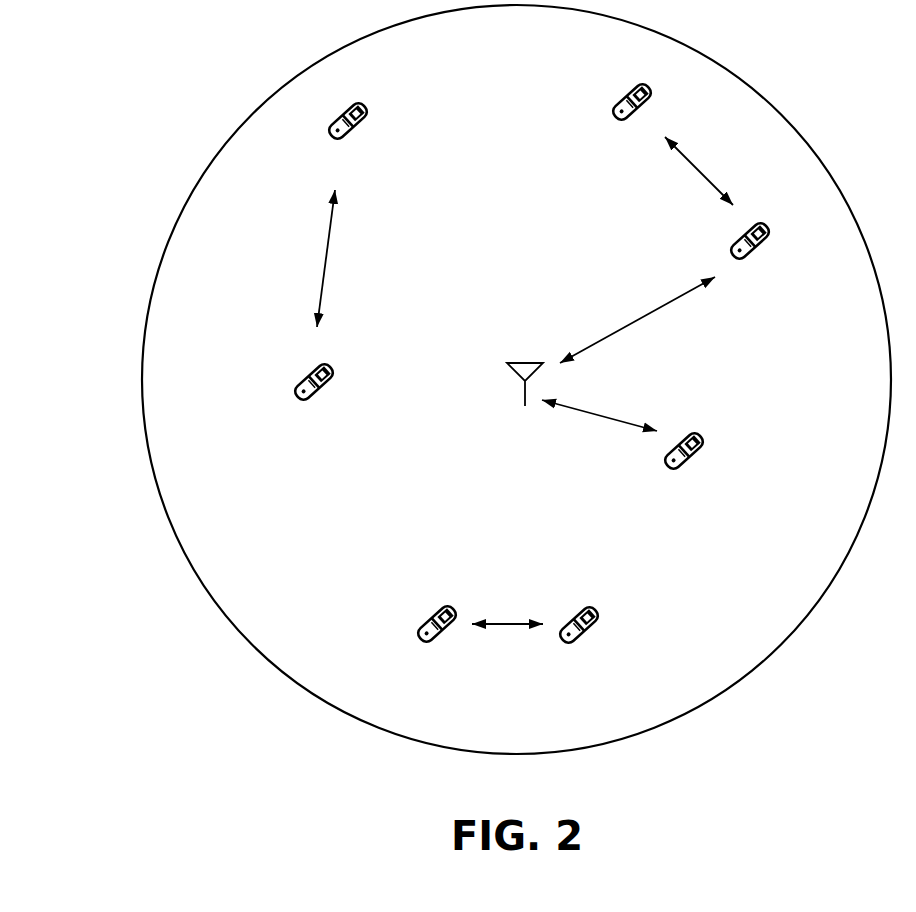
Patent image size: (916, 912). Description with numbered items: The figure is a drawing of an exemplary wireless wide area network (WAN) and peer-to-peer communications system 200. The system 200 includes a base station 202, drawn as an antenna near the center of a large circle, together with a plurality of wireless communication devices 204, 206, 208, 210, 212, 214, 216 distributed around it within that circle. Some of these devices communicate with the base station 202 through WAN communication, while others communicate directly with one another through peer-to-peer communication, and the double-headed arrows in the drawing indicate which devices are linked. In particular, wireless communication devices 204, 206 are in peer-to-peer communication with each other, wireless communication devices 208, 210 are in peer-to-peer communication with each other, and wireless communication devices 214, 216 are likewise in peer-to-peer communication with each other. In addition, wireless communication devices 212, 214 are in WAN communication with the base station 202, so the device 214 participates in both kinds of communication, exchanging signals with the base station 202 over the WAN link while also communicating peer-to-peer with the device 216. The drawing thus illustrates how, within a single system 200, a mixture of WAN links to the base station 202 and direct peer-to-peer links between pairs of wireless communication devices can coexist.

The wireless wide area network and peer-to-peer communications system 200 is at (185, 80).
The base station 202 is at (512, 387).
The wireless communication device 204 is at (313, 398).
The wireless communication device 206 is at (347, 136).
The wireless communication device 208 is at (436, 639).
The wireless communication device 210 is at (578, 640).
The wireless communication device 212 is at (683, 466).
The wireless communication device 214 is at (749, 258).
The wireless communication device 216 is at (631, 117).